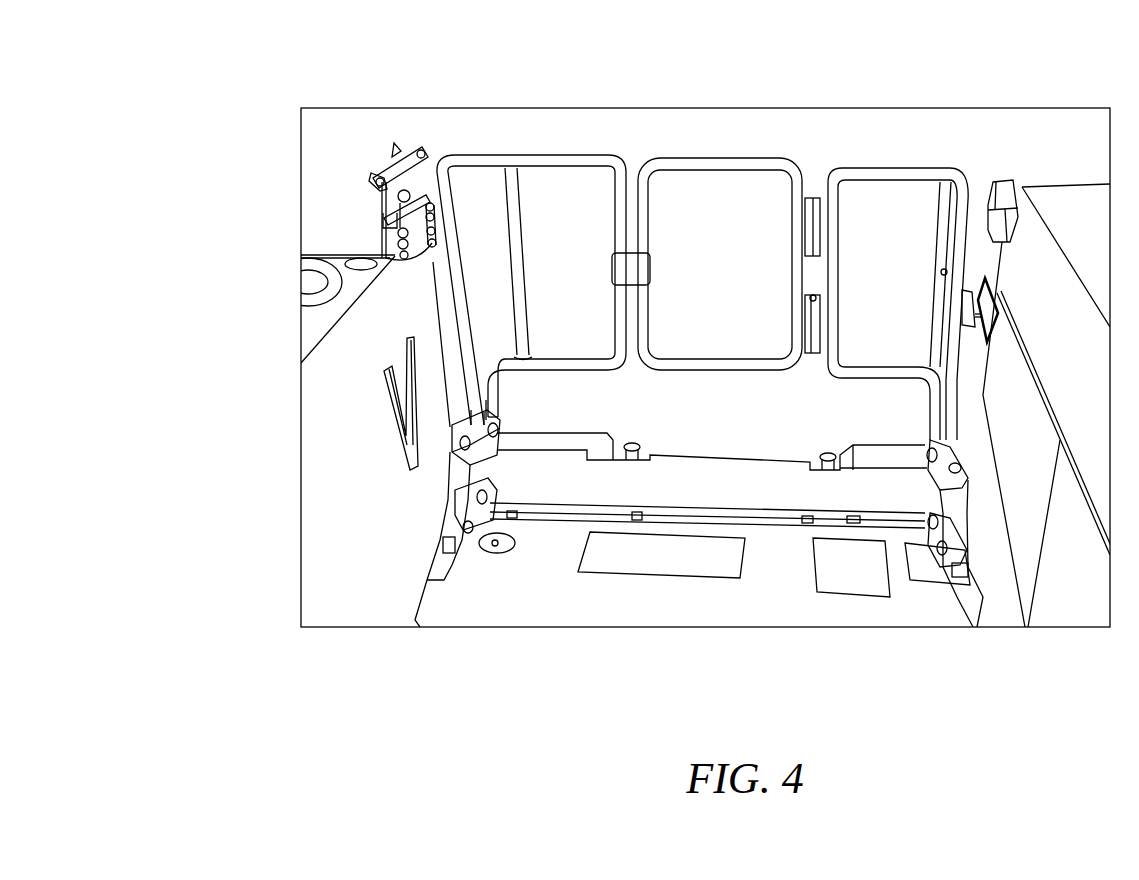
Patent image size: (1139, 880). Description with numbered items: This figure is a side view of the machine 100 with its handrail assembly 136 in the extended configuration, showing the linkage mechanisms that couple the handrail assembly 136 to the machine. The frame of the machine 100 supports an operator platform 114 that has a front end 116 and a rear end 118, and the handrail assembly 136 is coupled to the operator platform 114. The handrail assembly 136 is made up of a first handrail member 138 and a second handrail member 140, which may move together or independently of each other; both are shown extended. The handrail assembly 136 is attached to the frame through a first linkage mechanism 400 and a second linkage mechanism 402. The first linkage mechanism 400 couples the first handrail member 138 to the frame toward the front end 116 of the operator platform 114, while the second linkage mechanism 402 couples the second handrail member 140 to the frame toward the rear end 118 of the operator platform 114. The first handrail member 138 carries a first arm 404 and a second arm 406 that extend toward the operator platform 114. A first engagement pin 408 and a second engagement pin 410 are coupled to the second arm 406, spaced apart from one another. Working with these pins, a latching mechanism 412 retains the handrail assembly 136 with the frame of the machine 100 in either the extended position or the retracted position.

The machine 100 is at (235, 92).
The operator platform 114 is at (635, 608).
The front end 116 is at (417, 640).
The rear end 118 is at (977, 646).
The handrail assembly 136 is at (708, 148).
The first handrail member 138 is at (540, 157).
The second handrail member 140 is at (800, 172).
The first linkage mechanism 400 is at (499, 481).
The second linkage mechanism 402 is at (920, 502).
The first arm 404 is at (487, 427).
The second arm 406 is at (408, 150).
The first engagement pin 408 is at (382, 218).
The second engagement pin 410 is at (402, 200).
The latching mechanism 412 is at (371, 176).